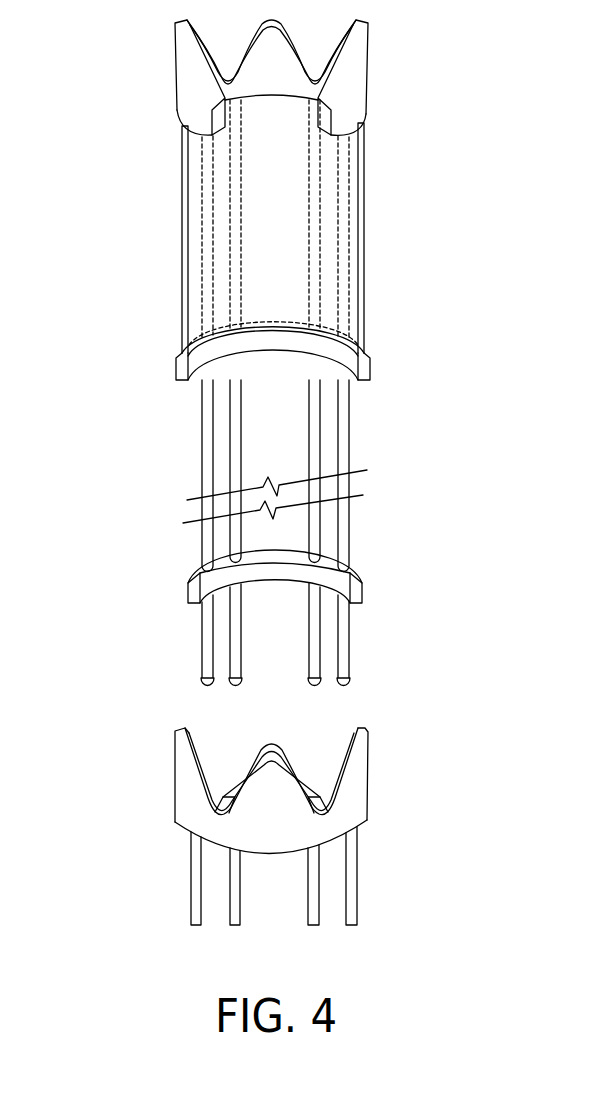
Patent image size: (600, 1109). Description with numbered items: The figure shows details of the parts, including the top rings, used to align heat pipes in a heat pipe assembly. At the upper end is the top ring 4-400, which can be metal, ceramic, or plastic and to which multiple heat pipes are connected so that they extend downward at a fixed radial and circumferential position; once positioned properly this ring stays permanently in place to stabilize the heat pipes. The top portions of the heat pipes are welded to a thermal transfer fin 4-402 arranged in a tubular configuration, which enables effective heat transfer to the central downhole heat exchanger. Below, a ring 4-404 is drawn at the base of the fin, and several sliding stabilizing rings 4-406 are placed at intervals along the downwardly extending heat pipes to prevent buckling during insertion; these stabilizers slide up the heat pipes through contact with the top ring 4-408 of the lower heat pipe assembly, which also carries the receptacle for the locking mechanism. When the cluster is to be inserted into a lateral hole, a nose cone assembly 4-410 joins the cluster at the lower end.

The top ring 4-400 is at (393, 59).
The thermal transfer fin 4-402 is at (377, 194).
The upper collar ring 4-404 is at (387, 361).
The sliding stabilizing rings 4-406 is at (378, 591).
The top ring of the lower heat pipe assembly 4-408 is at (385, 756).
The nose cone assembly 4-410 is at (180, 681).